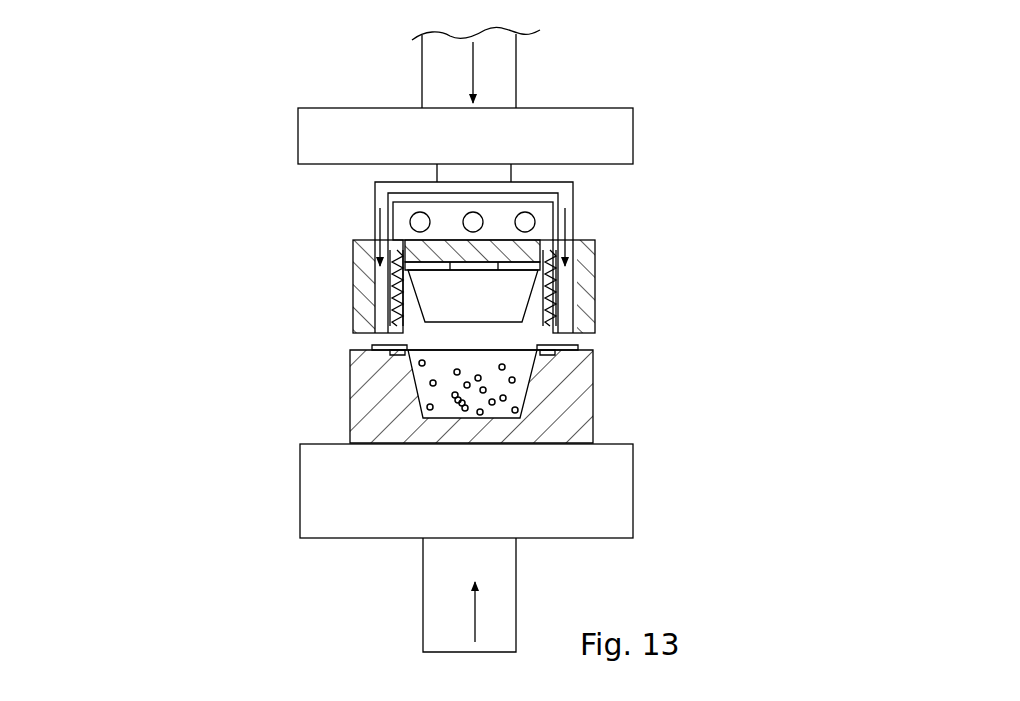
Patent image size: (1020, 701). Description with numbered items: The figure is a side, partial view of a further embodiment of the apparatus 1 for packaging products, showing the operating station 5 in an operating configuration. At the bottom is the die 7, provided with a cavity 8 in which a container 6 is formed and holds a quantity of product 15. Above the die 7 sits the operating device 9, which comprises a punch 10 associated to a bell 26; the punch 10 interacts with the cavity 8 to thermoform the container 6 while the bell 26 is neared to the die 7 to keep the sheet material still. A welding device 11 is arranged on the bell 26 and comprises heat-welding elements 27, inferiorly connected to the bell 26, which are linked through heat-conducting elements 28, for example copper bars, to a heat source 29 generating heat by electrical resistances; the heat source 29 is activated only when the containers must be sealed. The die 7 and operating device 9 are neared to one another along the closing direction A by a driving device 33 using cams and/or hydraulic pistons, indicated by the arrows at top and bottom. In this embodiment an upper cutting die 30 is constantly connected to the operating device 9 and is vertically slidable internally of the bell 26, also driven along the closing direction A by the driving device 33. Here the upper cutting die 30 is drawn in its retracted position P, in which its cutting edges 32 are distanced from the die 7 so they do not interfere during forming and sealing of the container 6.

The apparatus 1 is at (183, 245).
The operating station 5 is at (154, 298).
The containers 6 is at (540, 370).
The die 7 is at (372, 415).
The cavities 8 is at (505, 420).
The operating device 9 is at (642, 192).
The punch 10 is at (553, 322).
The welding device 11 is at (362, 297).
The product 15 is at (380, 442).
The bell 26 is at (584, 271).
The heat-welding elements 27 is at (390, 323).
The heat-conducting elements 28 is at (378, 246).
The heat source 29 is at (400, 213).
The upper cutting die 30 is at (352, 322).
The cutting edges 32 is at (365, 345).
The driving device 33 is at (578, 76).
The closing direction A is at (398, 230).
The retracted position P is at (730, 295).